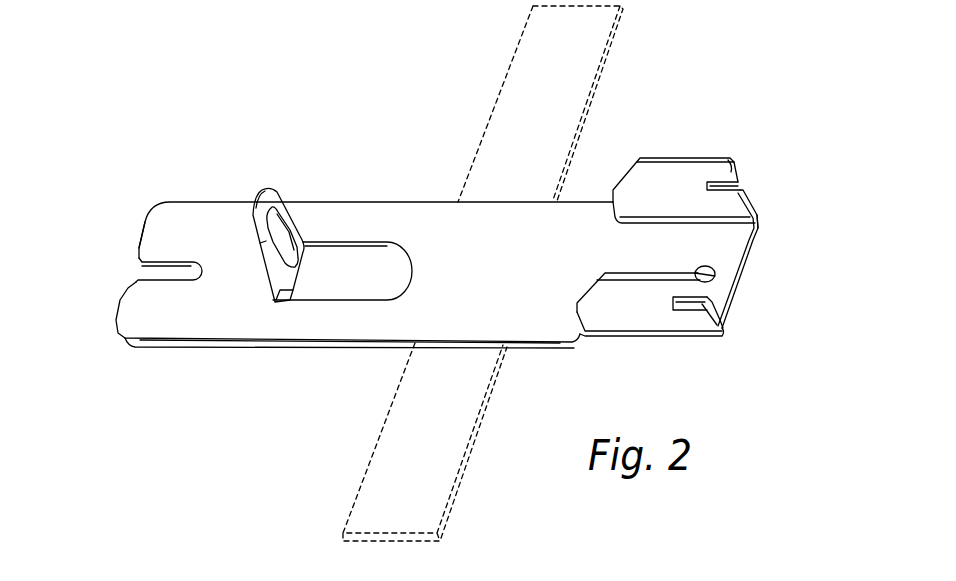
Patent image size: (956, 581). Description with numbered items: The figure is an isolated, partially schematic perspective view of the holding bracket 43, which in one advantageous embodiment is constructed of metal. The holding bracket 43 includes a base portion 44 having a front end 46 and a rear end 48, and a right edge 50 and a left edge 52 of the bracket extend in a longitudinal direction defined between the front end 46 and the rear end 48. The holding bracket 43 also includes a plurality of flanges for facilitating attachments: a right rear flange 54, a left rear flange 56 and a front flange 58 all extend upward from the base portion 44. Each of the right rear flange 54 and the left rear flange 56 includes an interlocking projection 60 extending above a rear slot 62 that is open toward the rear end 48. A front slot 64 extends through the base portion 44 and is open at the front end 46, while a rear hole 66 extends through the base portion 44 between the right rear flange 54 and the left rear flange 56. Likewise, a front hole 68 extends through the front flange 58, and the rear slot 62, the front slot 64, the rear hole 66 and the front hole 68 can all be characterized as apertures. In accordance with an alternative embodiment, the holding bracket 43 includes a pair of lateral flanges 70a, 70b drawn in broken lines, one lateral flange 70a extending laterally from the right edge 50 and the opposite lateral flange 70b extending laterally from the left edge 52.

The holding bracket 43 is at (340, 88).
The base portion 44 is at (509, 286).
The front end 46 is at (82, 208).
The rear end 48 is at (830, 297).
The right edge 50 is at (317, 343).
The left edge 52 is at (426, 202).
The right rear flange 54 is at (628, 312).
The left rear flange 56 is at (672, 180).
The front flange 58 is at (268, 190).
The interlocking projection 60 is at (730, 170).
The rear slot 62 is at (737, 182).
The front slot 64 is at (147, 273).
The rear hole 66 is at (752, 249).
The front hole 68 is at (286, 233).
The lateral flange 70a is at (463, 490).
The lateral flange 70b is at (517, 53).